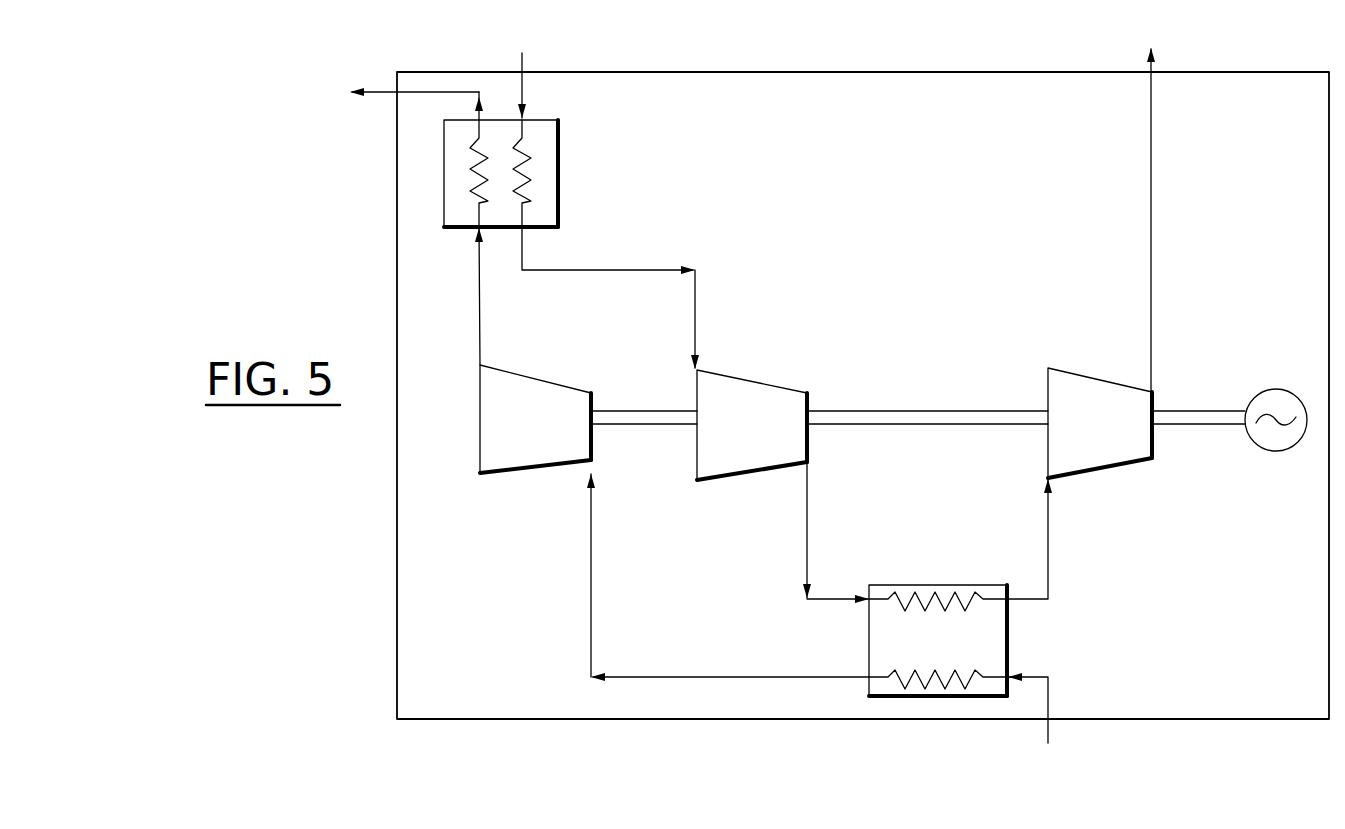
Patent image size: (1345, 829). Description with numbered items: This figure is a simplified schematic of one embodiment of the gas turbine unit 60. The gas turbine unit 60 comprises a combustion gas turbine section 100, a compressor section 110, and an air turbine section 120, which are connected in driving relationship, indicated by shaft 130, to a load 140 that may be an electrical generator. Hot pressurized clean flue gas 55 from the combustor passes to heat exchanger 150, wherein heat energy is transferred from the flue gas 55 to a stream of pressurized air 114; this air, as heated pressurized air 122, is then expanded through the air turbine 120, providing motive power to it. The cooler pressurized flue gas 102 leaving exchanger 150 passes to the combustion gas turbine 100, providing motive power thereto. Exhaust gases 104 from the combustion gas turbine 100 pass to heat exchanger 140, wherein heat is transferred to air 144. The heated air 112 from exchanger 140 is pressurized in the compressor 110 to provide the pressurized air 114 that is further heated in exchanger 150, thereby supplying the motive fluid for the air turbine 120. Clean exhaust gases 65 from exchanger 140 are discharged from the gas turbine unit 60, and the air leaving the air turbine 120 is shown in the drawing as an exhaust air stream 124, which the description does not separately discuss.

The hot pressurized clean flue gas 55 is at (1051, 733).
The gas turbine unit 60 is at (397, 640).
The clean exhaust gases 65 is at (383, 91).
The combustion gas turbine section 100 is at (512, 474).
The cooler pressurized flue gas 102 is at (760, 677).
The exhaust gases 104 is at (482, 317).
The compressor section 110 is at (728, 480).
The heated air 112 is at (575, 268).
The pressurized air 114 is at (808, 542).
The air turbine section 120 is at (1099, 474).
The heated pressurized air 122 is at (1048, 538).
The exhaust air line 124 is at (1151, 186).
The shaft 130 is at (622, 425).
The heat exchanger 140 is at (558, 178).
The air 144 is at (527, 91).
The heat exchanger 150 is at (1007, 634).